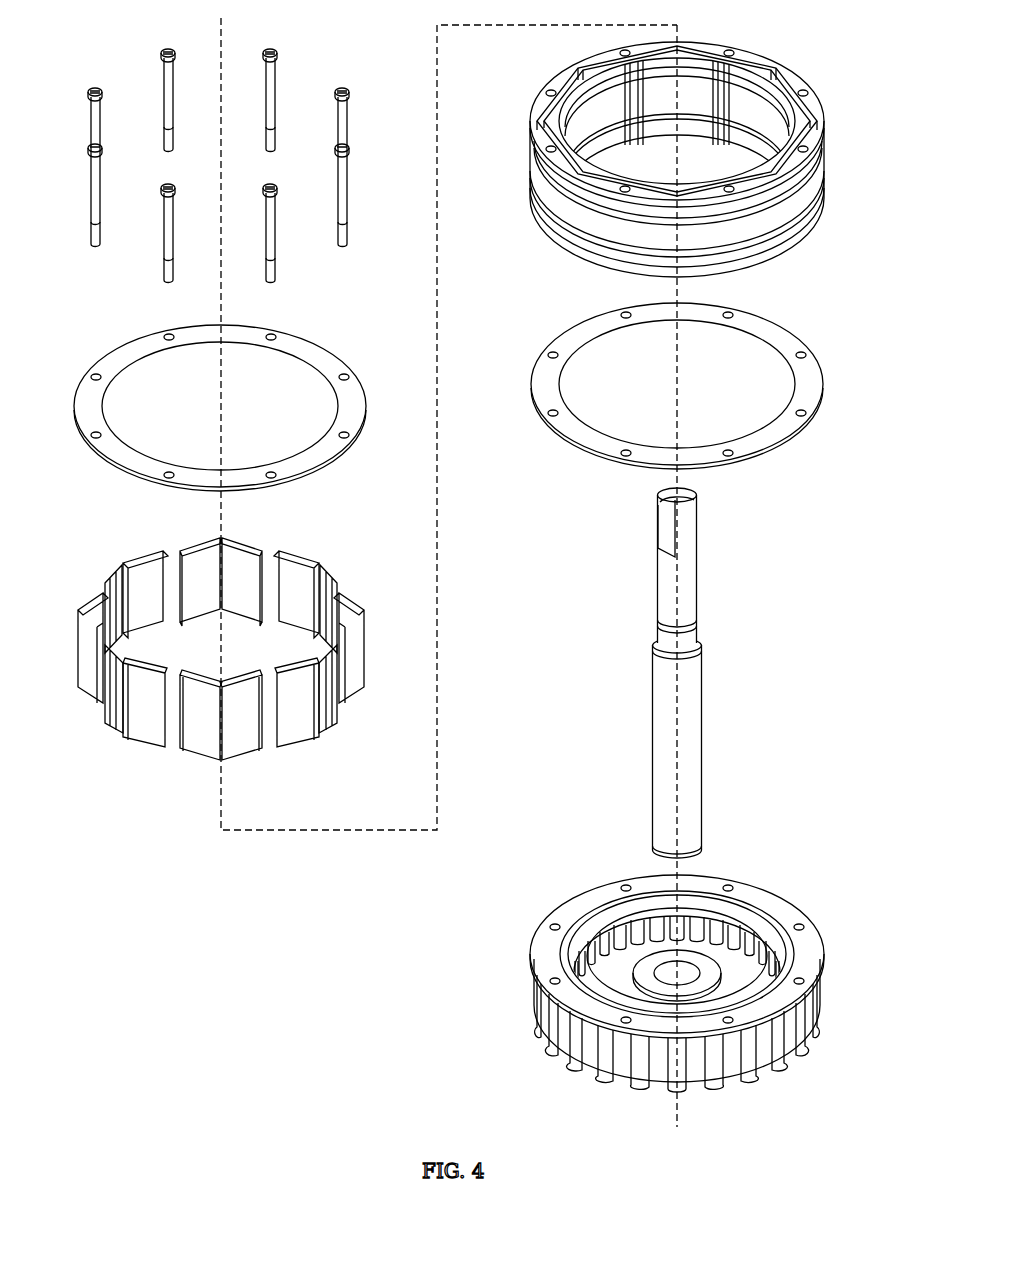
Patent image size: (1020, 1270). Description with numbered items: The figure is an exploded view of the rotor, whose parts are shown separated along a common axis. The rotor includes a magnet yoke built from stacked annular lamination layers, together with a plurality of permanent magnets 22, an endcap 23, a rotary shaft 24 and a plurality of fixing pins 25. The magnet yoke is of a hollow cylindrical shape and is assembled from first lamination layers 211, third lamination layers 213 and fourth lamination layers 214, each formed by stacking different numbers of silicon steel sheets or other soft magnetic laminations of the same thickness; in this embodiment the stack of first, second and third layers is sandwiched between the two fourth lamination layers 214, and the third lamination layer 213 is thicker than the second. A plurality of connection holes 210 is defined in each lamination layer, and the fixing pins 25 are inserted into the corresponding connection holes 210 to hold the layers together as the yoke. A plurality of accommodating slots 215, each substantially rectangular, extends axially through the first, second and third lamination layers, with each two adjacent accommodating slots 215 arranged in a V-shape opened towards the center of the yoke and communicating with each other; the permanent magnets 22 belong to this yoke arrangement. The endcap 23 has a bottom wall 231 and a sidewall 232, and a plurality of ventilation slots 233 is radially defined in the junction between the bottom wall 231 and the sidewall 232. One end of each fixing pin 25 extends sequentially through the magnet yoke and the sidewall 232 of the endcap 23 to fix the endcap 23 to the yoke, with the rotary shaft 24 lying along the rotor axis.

The fixing pins 25 is at (136, 57).
The connection holes 210 is at (475, 184).
The first lamination layer 211 is at (548, 190).
The third lamination layer 213 is at (530, 157).
The accommodating slots 215 is at (736, 48).
The fourth lamination layer 214 is at (138, 349).
The permanent magnets 22 is at (150, 543).
The rotary shaft 24 is at (670, 762).
The endcap 23 is at (618, 967).
The bottom wall 231 is at (733, 960).
The sidewall 232 is at (548, 955).
The ventilation slots 233 is at (562, 1036).